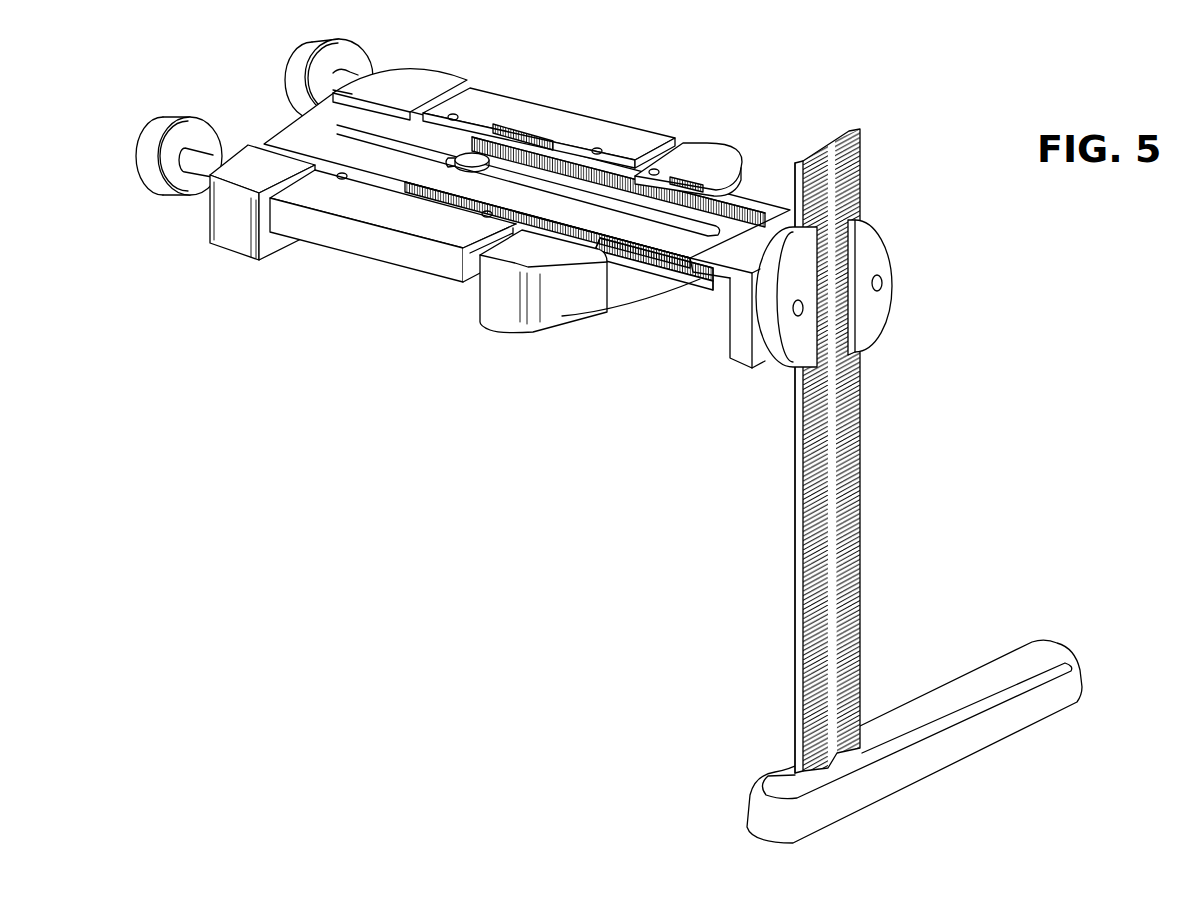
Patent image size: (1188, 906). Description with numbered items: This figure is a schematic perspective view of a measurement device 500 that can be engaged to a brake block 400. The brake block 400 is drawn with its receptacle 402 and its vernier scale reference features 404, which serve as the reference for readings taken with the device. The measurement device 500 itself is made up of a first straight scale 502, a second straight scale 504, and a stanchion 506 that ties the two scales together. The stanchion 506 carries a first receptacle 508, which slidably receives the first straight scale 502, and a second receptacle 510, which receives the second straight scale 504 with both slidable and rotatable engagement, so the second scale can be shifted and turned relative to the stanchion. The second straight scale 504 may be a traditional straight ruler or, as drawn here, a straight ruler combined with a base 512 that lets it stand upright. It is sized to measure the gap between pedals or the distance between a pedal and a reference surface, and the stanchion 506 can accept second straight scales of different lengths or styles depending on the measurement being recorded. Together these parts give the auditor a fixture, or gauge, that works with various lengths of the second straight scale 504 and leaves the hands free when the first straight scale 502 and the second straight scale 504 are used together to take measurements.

The brake block 400 is at (518, 107).
The receptacle 402 is at (479, 127).
The vernier scale reference features 404 is at (450, 207).
The measurement device 500 is at (940, 448).
The first straight scale 502 is at (553, 175).
The second straight scale 504 is at (835, 554).
The stanchion 506 is at (699, 227).
The first receptacle 508 is at (707, 276).
The second receptacle 510 is at (868, 263).
The base 512 is at (1033, 657).